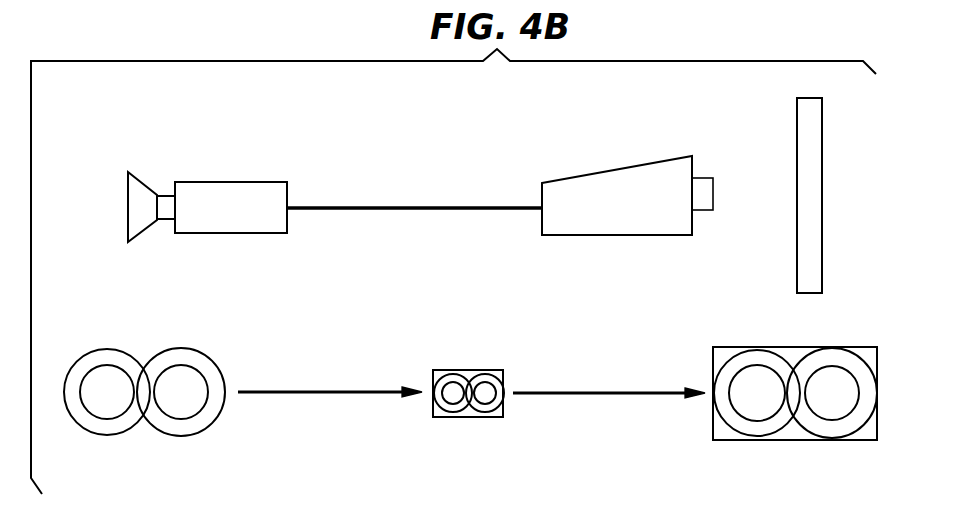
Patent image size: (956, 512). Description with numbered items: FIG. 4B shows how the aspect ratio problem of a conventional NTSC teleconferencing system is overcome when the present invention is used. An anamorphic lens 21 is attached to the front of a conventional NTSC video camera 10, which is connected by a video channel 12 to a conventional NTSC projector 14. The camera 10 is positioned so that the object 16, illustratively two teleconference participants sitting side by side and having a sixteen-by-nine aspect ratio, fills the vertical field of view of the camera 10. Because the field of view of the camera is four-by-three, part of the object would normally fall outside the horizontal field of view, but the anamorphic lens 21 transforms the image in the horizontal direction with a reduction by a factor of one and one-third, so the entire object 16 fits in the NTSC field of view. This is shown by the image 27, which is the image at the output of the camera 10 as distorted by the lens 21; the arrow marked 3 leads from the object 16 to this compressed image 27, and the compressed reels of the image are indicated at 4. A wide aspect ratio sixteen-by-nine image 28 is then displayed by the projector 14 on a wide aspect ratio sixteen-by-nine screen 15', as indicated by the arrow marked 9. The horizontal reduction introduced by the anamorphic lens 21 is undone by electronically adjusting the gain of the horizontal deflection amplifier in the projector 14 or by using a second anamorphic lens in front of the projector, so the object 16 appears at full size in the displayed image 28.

The anamorphic lens 21 is at (145, 184).
The video camera 10 is at (221, 183).
The video channel 12 is at (448, 208).
The projector 14 is at (596, 174).
The wide aspect ratio screen 15' is at (787, 190).
The object 16 is at (182, 437).
The first transfer step 3 is at (330, 377).
The image 27 is at (458, 370).
The small cassette reels 4 is at (469, 410).
The second transfer step 9 is at (609, 378).
The wide aspect ratio image 28 is at (792, 347).